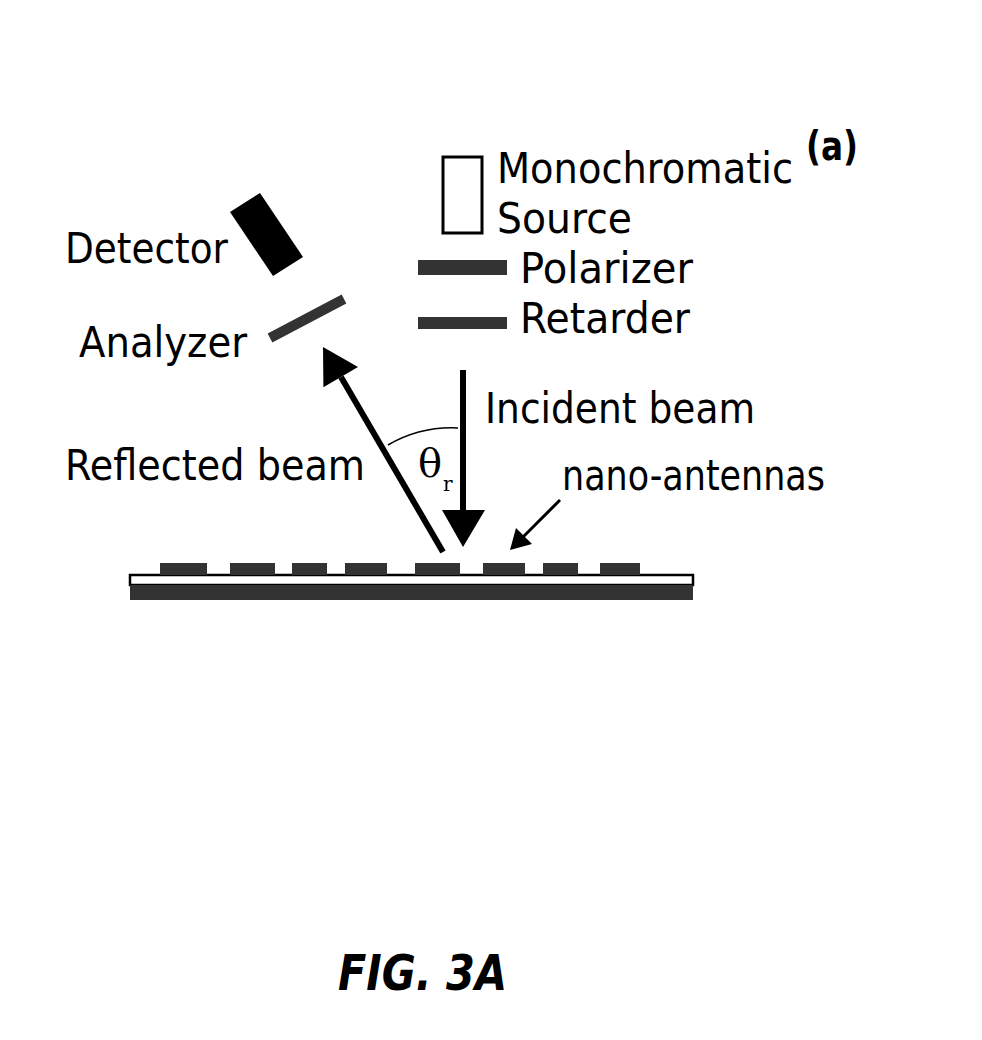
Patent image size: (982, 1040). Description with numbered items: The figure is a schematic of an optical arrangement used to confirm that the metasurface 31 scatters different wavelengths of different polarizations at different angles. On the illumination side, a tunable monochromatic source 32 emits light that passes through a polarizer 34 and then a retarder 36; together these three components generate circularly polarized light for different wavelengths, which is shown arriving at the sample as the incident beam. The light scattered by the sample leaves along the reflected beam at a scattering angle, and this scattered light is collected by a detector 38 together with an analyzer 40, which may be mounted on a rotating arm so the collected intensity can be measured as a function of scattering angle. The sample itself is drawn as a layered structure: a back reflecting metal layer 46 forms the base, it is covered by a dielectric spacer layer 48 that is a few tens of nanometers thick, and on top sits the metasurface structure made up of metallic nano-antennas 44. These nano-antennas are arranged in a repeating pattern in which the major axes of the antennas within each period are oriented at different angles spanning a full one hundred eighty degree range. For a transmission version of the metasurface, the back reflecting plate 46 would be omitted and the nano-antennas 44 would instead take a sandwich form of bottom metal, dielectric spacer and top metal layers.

The metasurface 31 is at (404, 572).
The tunable monochromatic source 32 is at (467, 155).
The polarizer 34 is at (448, 258).
The retarder 36 is at (428, 317).
The detector 38 is at (257, 195).
The analyzer 40 is at (308, 318).
The metallic nano-antennas 44 is at (415, 570).
The back reflecting metal layer 46 is at (165, 600).
The dielectric spacer layer 48 is at (677, 572).